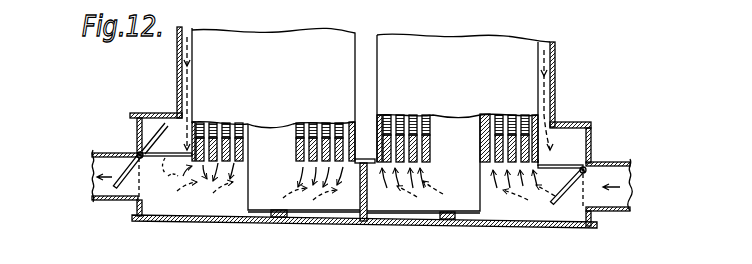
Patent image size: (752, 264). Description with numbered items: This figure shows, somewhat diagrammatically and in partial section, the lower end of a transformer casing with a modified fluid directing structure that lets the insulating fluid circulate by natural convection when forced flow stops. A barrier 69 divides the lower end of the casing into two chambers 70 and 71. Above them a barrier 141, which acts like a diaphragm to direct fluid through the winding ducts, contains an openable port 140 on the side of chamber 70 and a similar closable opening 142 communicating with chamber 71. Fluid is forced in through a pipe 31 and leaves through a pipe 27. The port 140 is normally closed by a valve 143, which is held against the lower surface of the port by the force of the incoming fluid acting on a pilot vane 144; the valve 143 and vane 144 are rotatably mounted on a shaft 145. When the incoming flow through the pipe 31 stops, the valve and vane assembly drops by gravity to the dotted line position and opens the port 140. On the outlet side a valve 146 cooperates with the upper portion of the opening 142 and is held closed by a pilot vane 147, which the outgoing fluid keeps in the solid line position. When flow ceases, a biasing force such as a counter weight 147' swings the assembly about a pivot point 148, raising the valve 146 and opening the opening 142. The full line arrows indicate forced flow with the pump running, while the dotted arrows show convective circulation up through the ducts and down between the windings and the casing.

The pipe 27 is at (92, 187).
The pipe 31 is at (627, 200).
The barrier 69 is at (362, 196).
The chamber 70 is at (507, 219).
The chamber 71 is at (238, 210).
The openable port 140 is at (570, 166).
The barrier 141 is at (541, 163).
The closable opening 142 is at (193, 177).
The valve 143 is at (546, 168).
The pilot vane 144 is at (562, 185).
The shaft 145 is at (589, 172).
The valve 146 is at (165, 138).
The pilot vane 147 is at (104, 154).
The counter weight 147' is at (118, 202).
The pivot point 148 is at (138, 153).